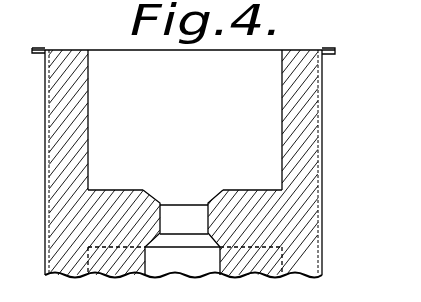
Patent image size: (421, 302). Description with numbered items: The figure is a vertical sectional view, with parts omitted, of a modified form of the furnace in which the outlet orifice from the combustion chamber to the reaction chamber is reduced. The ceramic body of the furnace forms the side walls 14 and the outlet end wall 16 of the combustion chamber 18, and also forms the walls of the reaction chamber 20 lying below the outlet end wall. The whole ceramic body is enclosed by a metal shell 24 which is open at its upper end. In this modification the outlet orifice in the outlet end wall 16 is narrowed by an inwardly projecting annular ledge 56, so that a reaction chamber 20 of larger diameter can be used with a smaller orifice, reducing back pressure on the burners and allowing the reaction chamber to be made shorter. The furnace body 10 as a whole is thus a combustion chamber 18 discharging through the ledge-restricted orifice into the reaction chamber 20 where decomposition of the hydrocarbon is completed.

The mold body 10 is at (292, 210).
The side walls 14 is at (292, 103).
The outlet end wall 16 is at (258, 190).
The combustion chamber 18 is at (122, 113).
The reaction chamber 20 is at (182, 261).
The metal shell 24 is at (322, 128).
The inwardly projecting annular ledge 56 is at (208, 217).